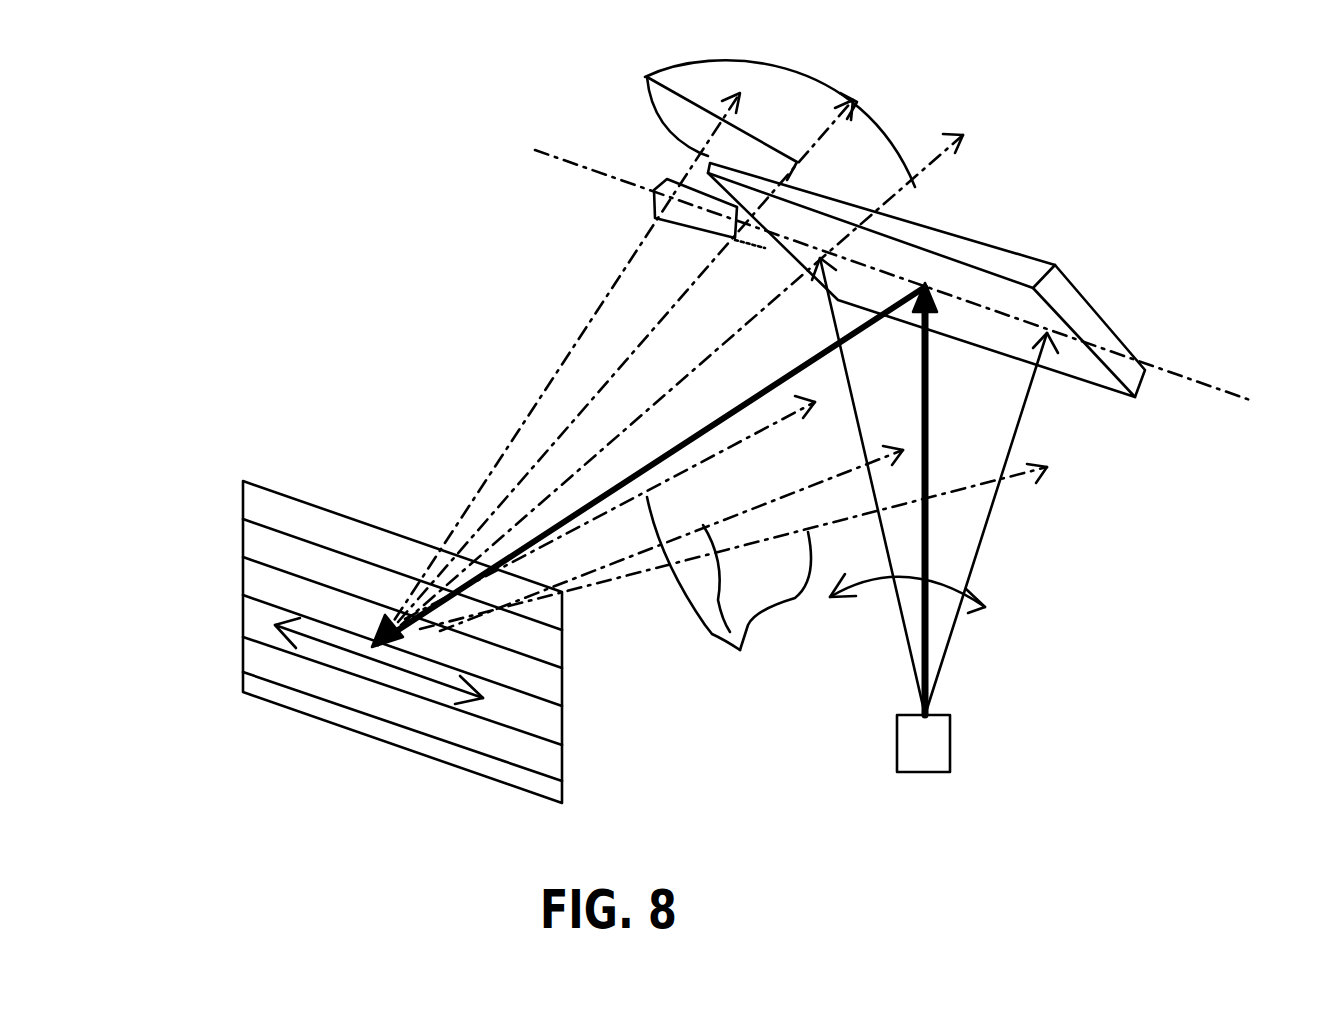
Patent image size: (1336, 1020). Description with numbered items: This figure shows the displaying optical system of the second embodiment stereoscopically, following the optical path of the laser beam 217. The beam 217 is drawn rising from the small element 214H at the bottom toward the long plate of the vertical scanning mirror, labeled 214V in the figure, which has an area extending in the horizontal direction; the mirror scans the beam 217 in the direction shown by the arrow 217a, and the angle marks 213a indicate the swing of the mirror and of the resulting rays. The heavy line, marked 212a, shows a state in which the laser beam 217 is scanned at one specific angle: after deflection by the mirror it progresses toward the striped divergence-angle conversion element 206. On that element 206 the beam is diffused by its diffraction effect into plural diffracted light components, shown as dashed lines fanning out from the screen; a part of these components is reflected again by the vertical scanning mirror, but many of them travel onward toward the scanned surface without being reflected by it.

The divergence-angle conversion element 206 is at (351, 642).
The light beam 212a is at (580, 503).
The rotation angle of vertical scanning mirror 213a is at (718, 353).
The vertical scanning mirror 214V is at (1140, 363).
The horizontal scanning mirror 214H is at (923, 740).
The laser beam 217 is at (935, 486).
The arrow 217a is at (980, 604).